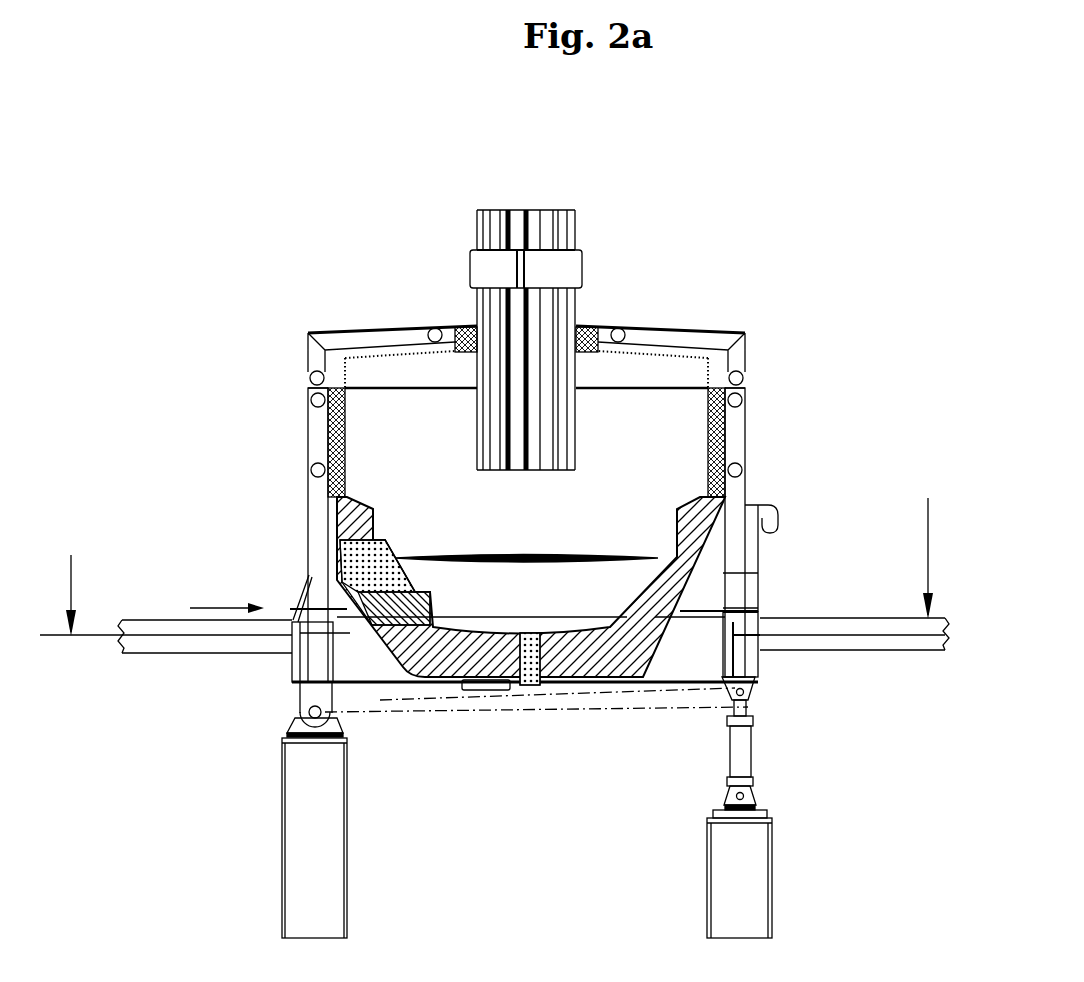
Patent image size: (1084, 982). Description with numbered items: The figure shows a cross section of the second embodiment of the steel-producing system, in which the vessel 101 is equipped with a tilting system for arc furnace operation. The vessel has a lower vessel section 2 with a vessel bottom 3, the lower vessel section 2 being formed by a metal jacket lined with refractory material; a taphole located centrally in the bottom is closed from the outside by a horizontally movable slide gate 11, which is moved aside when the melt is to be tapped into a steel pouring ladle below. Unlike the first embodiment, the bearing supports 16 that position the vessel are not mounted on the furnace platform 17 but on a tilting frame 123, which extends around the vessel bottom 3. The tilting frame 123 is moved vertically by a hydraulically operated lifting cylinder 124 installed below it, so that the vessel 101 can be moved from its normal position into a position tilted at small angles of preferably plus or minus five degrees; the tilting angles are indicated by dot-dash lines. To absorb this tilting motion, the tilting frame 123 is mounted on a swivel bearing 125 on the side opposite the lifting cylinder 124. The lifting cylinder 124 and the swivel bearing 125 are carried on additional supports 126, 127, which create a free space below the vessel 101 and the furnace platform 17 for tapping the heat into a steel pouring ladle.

The vessel 101 is at (784, 296).
The lower vessel section 2 is at (674, 654).
The vessel bottom 3 is at (598, 655).
The slide gate 11 is at (480, 690).
The bearing supports 16 is at (308, 545).
The furnace platform 17 is at (160, 622).
The tilting frame 123 is at (308, 657).
The lifting cylinder 124 is at (745, 742).
The swivel bearing 125 is at (305, 708).
The additional support 126 is at (752, 858).
The additional support 127 is at (297, 833).